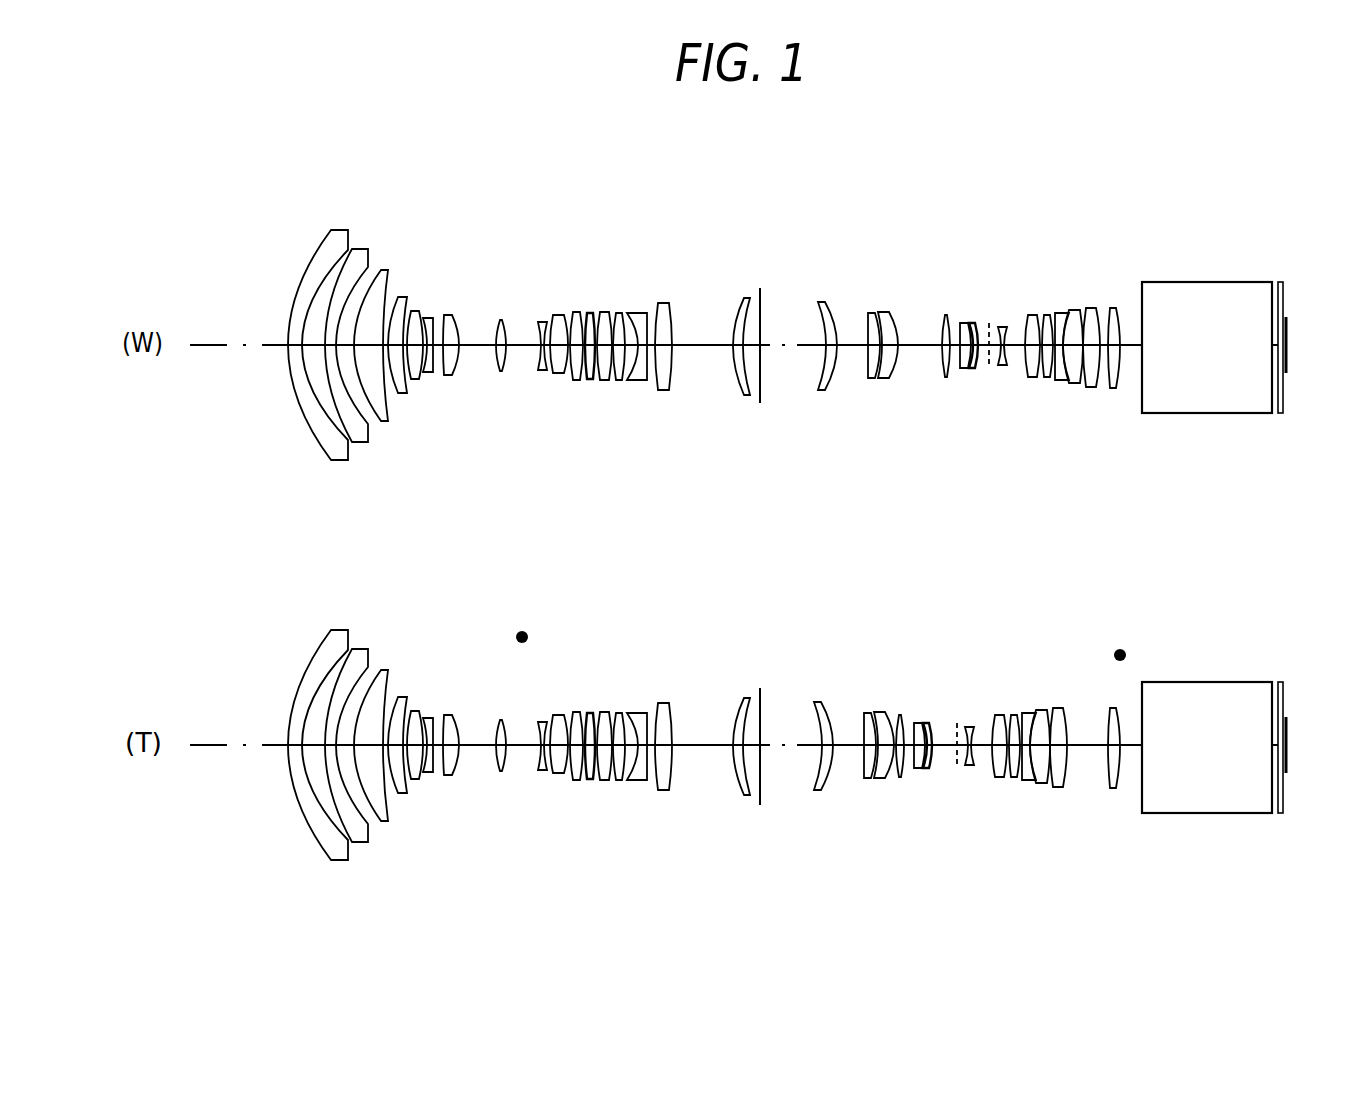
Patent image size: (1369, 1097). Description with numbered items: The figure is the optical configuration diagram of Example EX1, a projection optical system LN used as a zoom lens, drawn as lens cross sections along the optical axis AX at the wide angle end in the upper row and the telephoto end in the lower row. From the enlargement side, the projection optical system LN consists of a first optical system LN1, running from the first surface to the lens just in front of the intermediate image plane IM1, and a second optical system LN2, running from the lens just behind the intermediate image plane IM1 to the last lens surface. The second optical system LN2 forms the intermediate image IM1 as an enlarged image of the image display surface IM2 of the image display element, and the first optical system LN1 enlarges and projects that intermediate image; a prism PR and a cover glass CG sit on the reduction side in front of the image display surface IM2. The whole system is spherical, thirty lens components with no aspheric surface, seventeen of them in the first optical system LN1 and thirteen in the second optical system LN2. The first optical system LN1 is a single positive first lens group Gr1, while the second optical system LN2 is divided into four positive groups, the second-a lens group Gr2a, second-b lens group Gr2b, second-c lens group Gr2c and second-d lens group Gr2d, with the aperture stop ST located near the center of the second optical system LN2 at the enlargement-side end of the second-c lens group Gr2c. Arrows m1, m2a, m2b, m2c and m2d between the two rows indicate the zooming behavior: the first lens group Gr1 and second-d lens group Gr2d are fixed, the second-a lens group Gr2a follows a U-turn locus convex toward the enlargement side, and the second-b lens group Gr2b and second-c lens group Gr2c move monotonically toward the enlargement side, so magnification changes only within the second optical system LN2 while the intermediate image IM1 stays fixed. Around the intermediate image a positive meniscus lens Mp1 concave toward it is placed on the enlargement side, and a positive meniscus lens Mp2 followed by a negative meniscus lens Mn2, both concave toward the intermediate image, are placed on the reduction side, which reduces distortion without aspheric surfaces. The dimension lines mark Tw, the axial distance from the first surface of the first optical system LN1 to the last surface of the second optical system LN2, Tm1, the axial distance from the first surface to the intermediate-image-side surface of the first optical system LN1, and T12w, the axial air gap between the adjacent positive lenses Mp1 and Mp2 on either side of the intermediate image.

The Example 1 EX1 is at (729, 142).
The optical axis AX is at (208, 346).
The axial distance from the enlargement-side lens surface of the first optical syste Tw is at (1102, 189).
The axial distance from the enlargement-side lens surface to the intermediate-image- Tm1 is at (743, 202).
The axial air-gap between the positive lenses adjacent to the intermediate image T12w is at (823, 202).
The intermediate image plane IM1 is at (760, 283).
The image display surface IM2 is at (1286, 315).
The aperture stop ST is at (989, 318).
The prism PR is at (1223, 360).
The cover glass CG is at (1282, 415).
The positive lens Mp1 is at (749, 396).
The positive lens Mp2 is at (822, 393).
The negative lens Mn2 is at (872, 382).
The first lens group Gr1 is at (521, 545).
The second-a lens group Gr2a is at (854, 546).
The second-b lens group Gr2b is at (930, 468).
The second-c lens group Gr2c is at (1000, 468).
The second-d lens group Gr2d is at (1112, 468).
The arrow m1 is at (523, 585).
The arrow m2a is at (853, 495).
The arrow m2b is at (957, 495).
The arrow m2c is at (1050, 495).
The arrow m2d is at (1120, 495).
The first optical system LN1 is at (521, 574).
The second optical system LN2 is at (987, 589).
The projection optical system LN is at (726, 598).